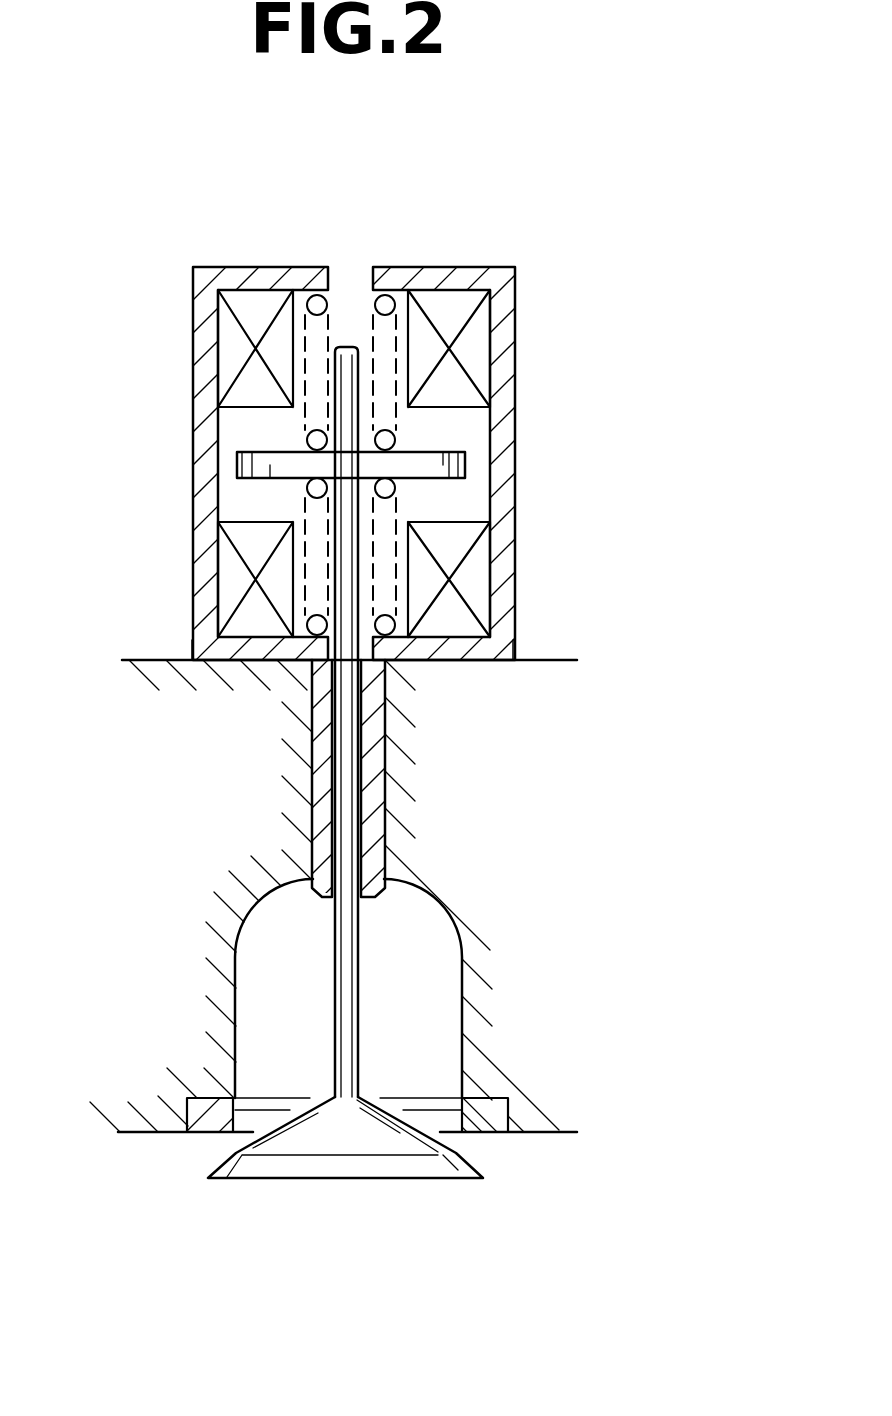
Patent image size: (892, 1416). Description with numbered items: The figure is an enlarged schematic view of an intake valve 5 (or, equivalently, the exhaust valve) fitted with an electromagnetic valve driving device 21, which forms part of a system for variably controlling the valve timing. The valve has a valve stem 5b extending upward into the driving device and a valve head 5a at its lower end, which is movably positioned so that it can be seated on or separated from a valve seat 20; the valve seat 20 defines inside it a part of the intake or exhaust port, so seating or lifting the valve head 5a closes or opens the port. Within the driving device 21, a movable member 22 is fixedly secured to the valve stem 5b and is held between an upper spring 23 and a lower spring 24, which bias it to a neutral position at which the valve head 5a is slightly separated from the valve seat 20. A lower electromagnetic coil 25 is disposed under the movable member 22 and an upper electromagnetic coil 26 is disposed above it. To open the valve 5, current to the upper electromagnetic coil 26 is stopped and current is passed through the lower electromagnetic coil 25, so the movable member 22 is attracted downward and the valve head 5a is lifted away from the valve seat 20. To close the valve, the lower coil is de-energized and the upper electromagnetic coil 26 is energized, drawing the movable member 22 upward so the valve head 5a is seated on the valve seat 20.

The intake valve 5 is at (448, 813).
The valve head 5a is at (340, 1180).
The valve stem 5b is at (352, 1028).
The valve seat 20 is at (498, 1130).
The electromagnetic valve driving device 21 is at (517, 328).
The movable member 22 is at (433, 463).
The upper spring 23 is at (320, 418).
The lower spring 24 is at (317, 502).
The lower electromagnetic coil 25 is at (230, 588).
The upper electromagnetic coil 26 is at (230, 352).